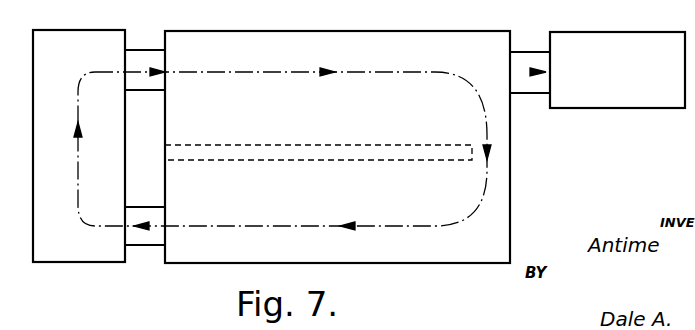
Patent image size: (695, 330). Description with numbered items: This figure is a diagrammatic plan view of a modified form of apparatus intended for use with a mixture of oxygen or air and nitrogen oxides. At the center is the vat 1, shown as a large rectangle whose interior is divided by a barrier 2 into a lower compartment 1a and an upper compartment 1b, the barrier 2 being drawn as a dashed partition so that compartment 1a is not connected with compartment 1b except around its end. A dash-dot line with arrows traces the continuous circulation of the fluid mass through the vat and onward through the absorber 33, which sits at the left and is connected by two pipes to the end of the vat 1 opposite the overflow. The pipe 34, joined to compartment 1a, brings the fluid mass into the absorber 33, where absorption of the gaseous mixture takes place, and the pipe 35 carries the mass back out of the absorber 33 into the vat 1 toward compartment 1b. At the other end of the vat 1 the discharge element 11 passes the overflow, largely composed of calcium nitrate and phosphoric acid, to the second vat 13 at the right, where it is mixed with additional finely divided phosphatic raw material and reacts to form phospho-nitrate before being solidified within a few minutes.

The vat 1 is at (500, 177).
The compartment of vat 1a is at (373, 216).
The compartment of vat 1b is at (376, 116).
The barrier 2 is at (302, 148).
The discharge element 11 is at (525, 58).
The second vat 13 is at (622, 77).
The absorber 33 is at (70, 163).
The pipe 34 is at (144, 246).
The pipe 35 is at (140, 52).